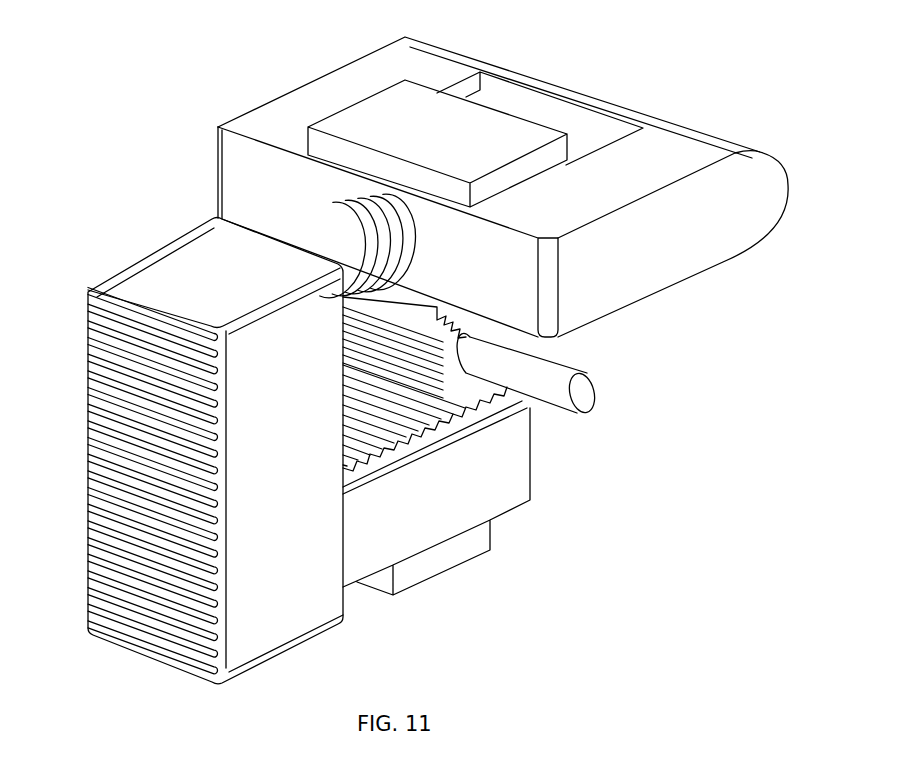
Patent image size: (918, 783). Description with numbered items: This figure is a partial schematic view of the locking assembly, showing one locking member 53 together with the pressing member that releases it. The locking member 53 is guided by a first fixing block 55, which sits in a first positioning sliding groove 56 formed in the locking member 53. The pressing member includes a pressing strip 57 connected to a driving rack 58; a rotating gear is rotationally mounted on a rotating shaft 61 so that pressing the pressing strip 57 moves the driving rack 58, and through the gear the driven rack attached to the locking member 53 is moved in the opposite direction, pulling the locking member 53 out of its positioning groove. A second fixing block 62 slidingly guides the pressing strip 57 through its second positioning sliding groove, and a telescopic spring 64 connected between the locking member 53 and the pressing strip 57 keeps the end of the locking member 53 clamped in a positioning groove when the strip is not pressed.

The locking member 53 is at (640, 263).
The first fixing block 55 is at (387, 113).
The first positioning sliding groove 56 is at (542, 113).
The pressing strip 57 is at (167, 268).
The driving rack 58 is at (400, 437).
The rotating shaft 61 is at (600, 390).
The second fixing block 62 is at (395, 597).
The telescopic spring 64 is at (340, 258).